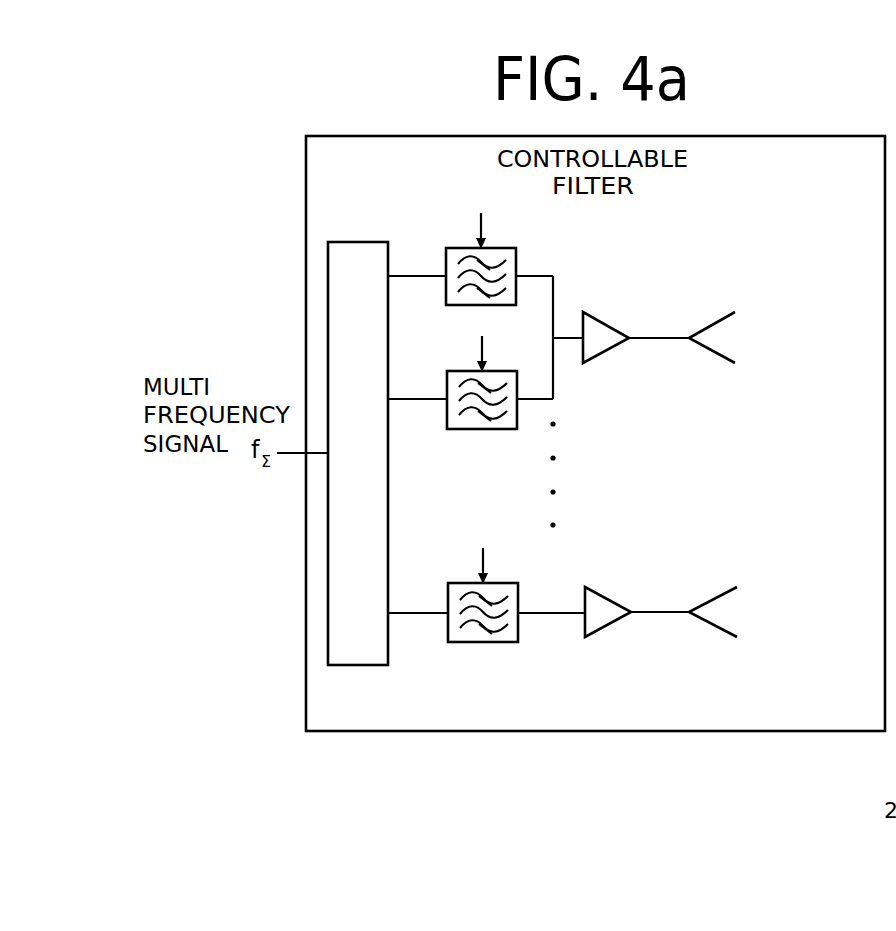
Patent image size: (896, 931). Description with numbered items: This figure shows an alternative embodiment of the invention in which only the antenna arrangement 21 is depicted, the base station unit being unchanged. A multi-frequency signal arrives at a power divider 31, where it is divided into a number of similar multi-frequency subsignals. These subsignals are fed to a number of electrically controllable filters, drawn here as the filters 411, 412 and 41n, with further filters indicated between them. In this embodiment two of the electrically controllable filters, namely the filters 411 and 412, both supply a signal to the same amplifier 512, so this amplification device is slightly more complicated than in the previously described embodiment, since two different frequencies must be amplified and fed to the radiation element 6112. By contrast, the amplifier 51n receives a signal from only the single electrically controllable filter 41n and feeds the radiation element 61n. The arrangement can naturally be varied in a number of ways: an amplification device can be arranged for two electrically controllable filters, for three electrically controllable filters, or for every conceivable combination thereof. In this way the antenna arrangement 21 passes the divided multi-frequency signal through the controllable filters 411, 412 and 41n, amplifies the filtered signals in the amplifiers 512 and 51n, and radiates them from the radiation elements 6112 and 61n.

The antenna arrangement 21 is at (306, 646).
The power divider 31 is at (345, 241).
The controllable filter 411 is at (446, 256).
The controllable filter 412 is at (447, 380).
The controllable filter 41n is at (448, 592).
The amplifier 512 is at (610, 322).
The amplifier 51n is at (612, 597).
The radiation element 6112 is at (721, 318).
The radiation element 61n is at (718, 630).